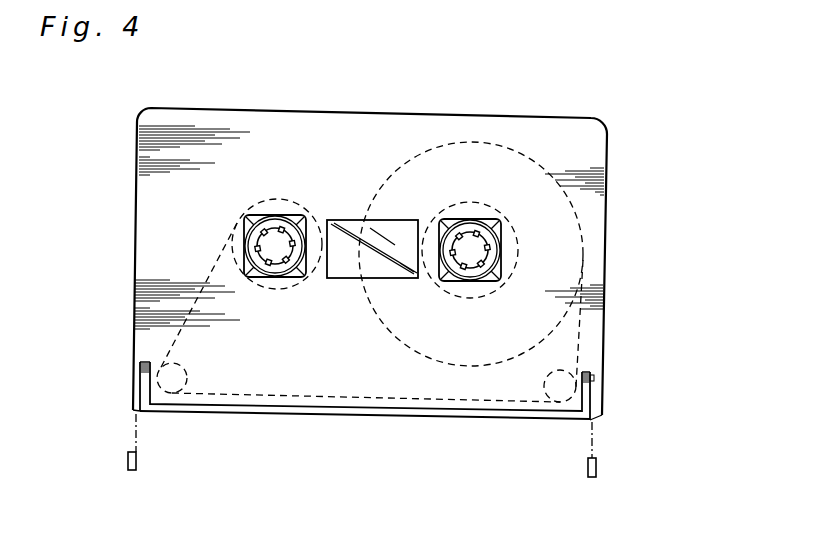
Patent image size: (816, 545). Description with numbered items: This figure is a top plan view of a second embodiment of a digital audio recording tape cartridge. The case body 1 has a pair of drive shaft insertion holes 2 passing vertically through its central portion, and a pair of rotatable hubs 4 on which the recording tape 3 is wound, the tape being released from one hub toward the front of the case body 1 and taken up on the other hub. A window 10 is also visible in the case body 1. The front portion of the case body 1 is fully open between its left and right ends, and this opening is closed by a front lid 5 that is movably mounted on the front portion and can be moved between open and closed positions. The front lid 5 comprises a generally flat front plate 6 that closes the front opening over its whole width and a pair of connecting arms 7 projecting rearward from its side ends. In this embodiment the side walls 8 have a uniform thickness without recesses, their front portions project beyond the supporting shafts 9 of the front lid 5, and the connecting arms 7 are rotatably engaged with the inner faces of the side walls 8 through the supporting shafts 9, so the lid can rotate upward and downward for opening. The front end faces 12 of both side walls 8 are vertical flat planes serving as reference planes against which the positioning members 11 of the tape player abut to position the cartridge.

The case body 1 is at (509, 117).
The drive shaft insertion holes 2 is at (268, 244).
The recording tape 3 is at (298, 396).
The rotatable hubs 4 is at (291, 292).
The front lid 5 is at (313, 414).
The front plate 6 is at (385, 419).
The connecting arms 7 is at (143, 392).
The side walls 8 is at (135, 303).
The supporting shafts 9 is at (136, 372).
The window 10 is at (372, 249).
The positioning members 11 is at (137, 460).
The front end faces 12 is at (134, 411).